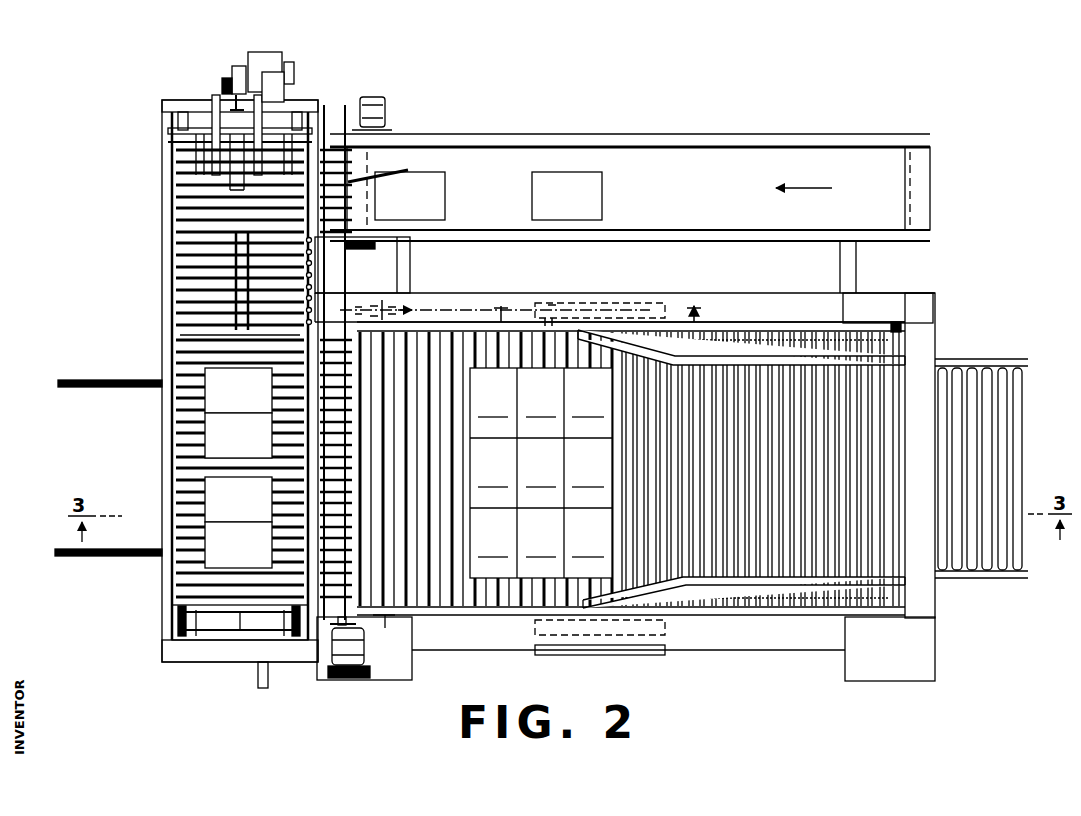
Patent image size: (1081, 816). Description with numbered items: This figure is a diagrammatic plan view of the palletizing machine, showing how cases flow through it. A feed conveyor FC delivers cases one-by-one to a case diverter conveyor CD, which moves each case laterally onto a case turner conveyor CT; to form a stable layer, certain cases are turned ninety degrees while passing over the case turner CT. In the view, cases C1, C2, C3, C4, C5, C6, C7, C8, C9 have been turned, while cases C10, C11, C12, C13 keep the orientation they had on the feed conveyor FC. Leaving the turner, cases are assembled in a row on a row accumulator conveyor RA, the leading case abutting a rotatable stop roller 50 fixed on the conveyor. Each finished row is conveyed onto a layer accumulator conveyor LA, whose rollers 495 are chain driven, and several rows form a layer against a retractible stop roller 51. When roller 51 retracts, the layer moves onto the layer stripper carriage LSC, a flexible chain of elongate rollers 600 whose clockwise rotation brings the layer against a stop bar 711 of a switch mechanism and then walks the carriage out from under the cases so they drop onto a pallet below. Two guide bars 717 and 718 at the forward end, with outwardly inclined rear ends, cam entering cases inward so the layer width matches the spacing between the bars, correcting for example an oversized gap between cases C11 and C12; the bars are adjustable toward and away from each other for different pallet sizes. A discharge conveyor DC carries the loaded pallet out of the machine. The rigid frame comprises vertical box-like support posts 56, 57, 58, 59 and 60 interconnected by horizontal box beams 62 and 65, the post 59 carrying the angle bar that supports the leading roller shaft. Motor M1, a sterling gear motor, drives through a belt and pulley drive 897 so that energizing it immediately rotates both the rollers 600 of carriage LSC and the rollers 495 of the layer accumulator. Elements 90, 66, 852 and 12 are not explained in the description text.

The case turner conveyor CT is at (170, 291).
The row accumulator conveyor RA is at (166, 438).
The rotatable stop roller 50 is at (164, 577).
The base 90 is at (164, 598).
The case diverter conveyor CD is at (330, 150).
The feed conveyor FC is at (628, 176).
The conveyor belt 66 is at (718, 203).
The layer stripper carriage LSC is at (760, 332).
The guide bar 717 is at (888, 308).
The support post 59 is at (930, 306).
The stop bar 711 is at (900, 347).
The control line 852 is at (488, 302).
The section line 12 is at (602, 297).
The support post 60 is at (636, 300).
The box beam 65 is at (716, 304).
The rollers of the accumulator conveyor 495 is at (478, 616).
The rollers 600 is at (802, 612).
The retractible stop roller 51 is at (610, 370).
The case C1 is at (588, 546).
The case C2 is at (588, 476).
The case C3 is at (588, 406).
The case C4 is at (541, 546).
The case C5 is at (541, 476).
The case C6 is at (541, 406).
The case C7 is at (493, 546).
The case C8 is at (493, 476).
The case C9 is at (493, 406).
The case C10 is at (262, 556).
The case C11 is at (262, 511).
The case C12 is at (262, 447).
The case C13 is at (262, 402).
The guide bar 718 is at (850, 580).
The discharge conveyor DC is at (1002, 548).
The support post 56 is at (398, 655).
The motor M1 is at (358, 644).
The belt and pulley drive 897 is at (336, 680).
The layer accumulator conveyor LA is at (425, 578).
The support post 57 is at (538, 626).
The box beam 62 is at (720, 648).
The support post 58 is at (845, 668).